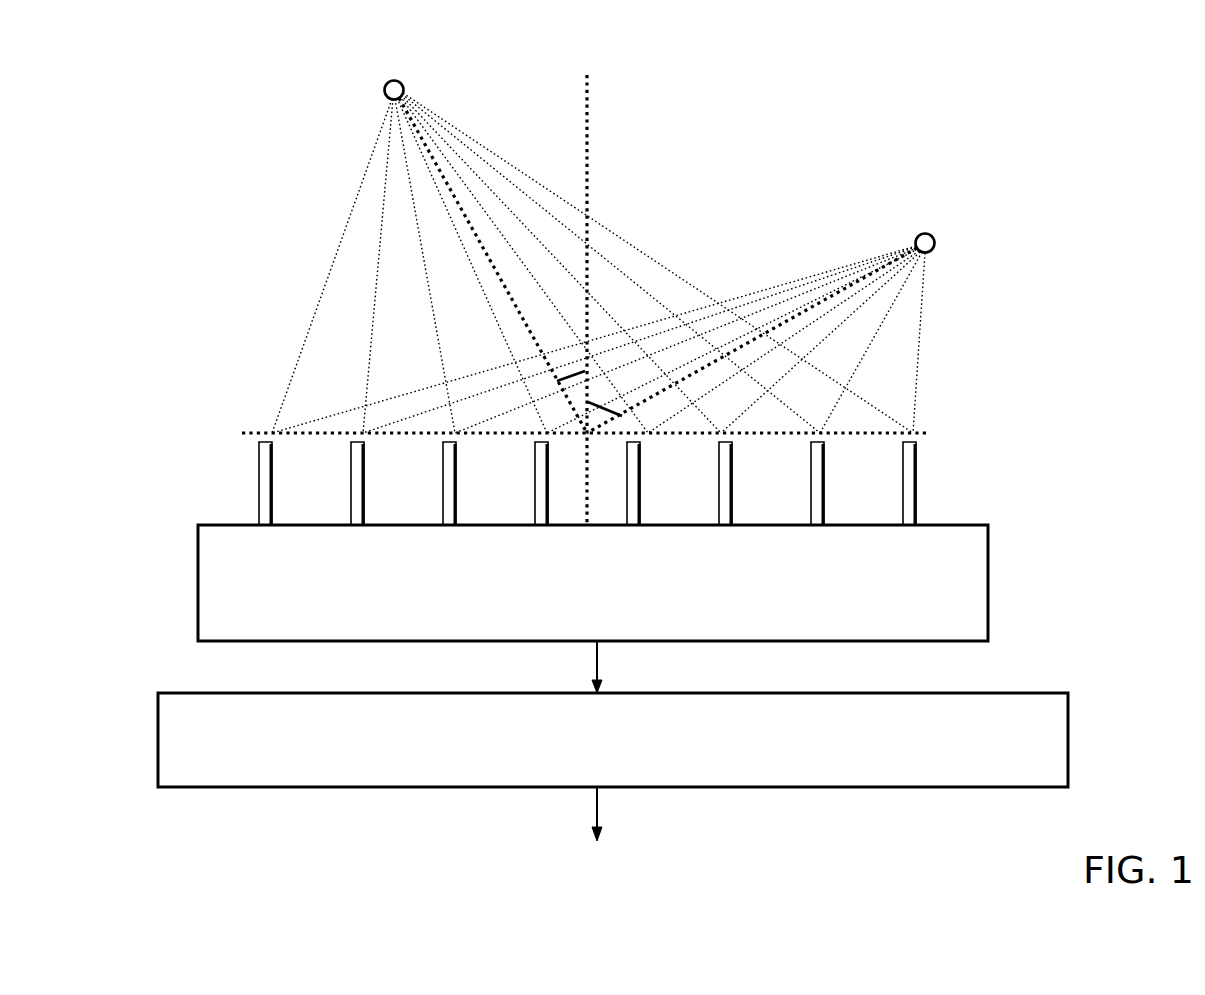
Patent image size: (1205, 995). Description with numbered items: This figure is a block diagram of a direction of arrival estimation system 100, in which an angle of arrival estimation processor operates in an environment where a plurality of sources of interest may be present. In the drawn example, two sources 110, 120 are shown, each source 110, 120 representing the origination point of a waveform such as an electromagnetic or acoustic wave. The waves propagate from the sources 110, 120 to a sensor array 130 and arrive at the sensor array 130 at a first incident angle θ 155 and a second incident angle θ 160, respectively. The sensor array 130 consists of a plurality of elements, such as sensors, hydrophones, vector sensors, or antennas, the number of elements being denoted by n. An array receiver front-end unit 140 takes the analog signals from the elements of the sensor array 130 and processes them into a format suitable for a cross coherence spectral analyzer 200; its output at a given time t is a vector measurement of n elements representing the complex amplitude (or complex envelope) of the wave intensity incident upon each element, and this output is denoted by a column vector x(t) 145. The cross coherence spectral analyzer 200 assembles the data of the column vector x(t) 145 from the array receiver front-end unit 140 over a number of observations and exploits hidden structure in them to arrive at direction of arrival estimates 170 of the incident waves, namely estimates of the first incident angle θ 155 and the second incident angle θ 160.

The direction of arrival estimation system 100 is at (1182, 103).
The source 110 is at (384, 90).
The source 120 is at (935, 243).
The sensor array 130 is at (918, 482).
The array receiver front-end unit 140 is at (593, 583).
The column vector x(t) 145 is at (599, 660).
The incident angle θ1 155 is at (585, 371).
The incident angle θ2 160 is at (622, 416).
The direction of arrival estimates 170 is at (592, 842).
The cross coherence spectral analyzer 200 is at (613, 740).